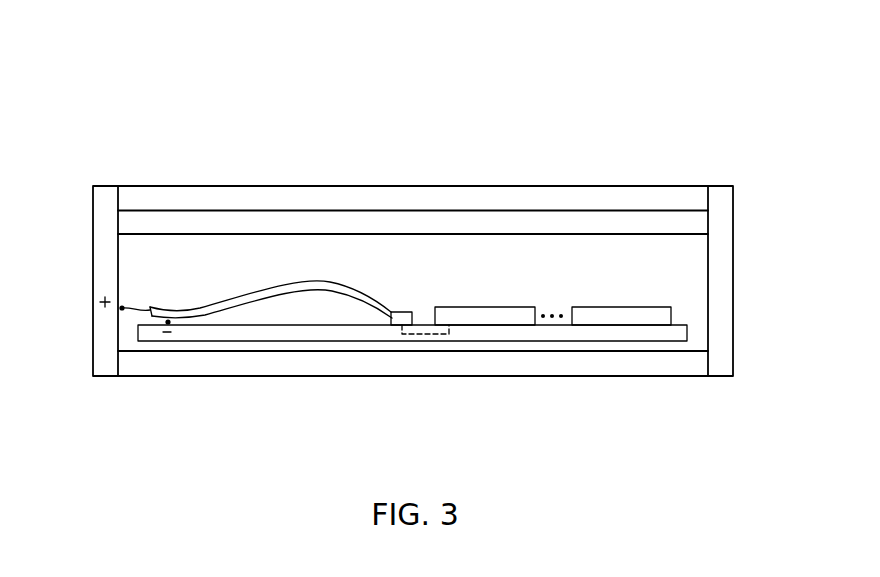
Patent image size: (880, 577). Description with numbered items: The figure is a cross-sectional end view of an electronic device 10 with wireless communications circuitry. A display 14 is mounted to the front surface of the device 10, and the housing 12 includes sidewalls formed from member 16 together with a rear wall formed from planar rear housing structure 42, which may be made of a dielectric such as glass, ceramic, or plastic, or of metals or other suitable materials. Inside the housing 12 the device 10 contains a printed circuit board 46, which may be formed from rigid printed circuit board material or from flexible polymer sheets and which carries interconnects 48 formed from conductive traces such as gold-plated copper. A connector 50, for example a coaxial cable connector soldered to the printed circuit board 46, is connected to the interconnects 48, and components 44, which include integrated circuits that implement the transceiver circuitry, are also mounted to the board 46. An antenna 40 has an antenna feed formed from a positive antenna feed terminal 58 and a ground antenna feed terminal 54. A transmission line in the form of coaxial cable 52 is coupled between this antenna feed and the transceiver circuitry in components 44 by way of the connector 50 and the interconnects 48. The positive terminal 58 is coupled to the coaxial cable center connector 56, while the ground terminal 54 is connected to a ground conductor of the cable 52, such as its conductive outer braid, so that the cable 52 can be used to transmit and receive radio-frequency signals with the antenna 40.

The electronic device 10 is at (695, 50).
The housing 12 is at (694, 410).
The display 14 is at (542, 219).
The member 16 is at (101, 282).
The antenna 40 is at (175, 258).
The planar rear housing structure 42 is at (231, 363).
The components 44 is at (595, 310).
The printed circuit board 46 is at (347, 333).
The interconnects 48 is at (433, 336).
The connector 50 is at (412, 318).
The coaxial cable 52 is at (281, 277).
The ground antenna feed terminal 54 is at (168, 322).
The coaxial cable center connector 56 is at (135, 308).
The positive antenna feed terminal 58 is at (122, 308).